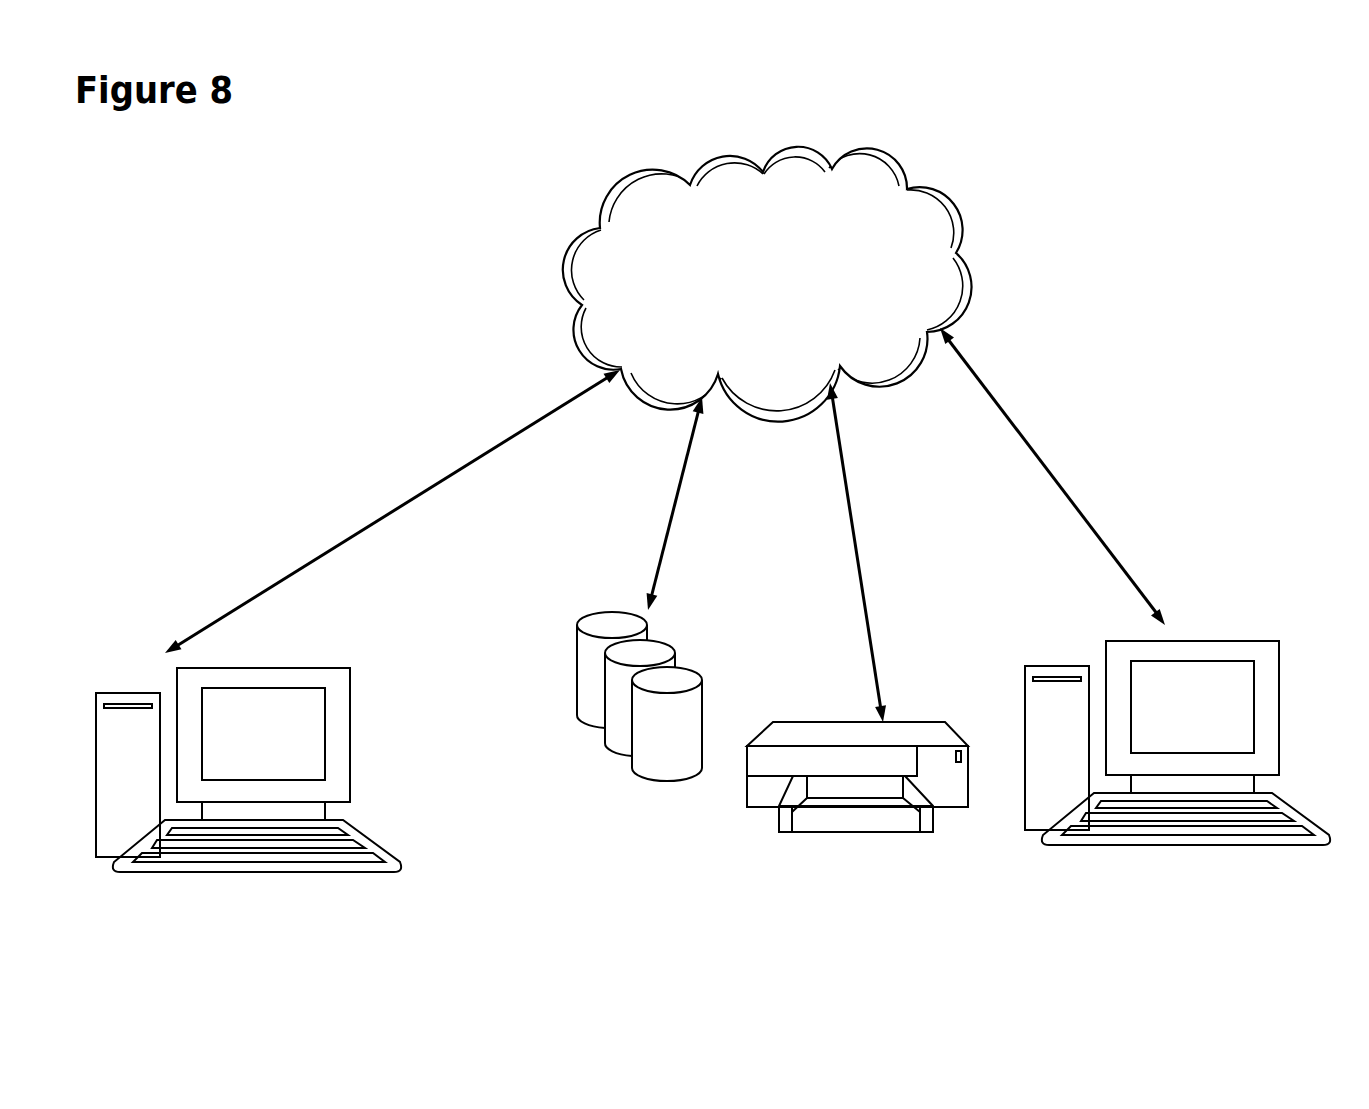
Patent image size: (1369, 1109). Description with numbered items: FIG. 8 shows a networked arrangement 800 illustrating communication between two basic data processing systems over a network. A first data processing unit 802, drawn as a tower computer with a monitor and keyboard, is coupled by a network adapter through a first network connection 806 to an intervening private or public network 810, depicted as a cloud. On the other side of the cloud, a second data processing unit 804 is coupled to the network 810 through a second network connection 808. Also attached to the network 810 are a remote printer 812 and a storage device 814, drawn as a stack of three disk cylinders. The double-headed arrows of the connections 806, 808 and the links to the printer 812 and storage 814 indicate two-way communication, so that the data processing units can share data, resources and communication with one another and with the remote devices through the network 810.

The network system 800 is at (1072, 131).
The data processing unit 802 is at (248, 819).
The data processing unit 804 is at (1177, 786).
The network connection 806 is at (392, 511).
The network connection 808 is at (1092, 476).
The network 810 is at (767, 284).
The printer 812 is at (857, 634).
The storage 814 is at (621, 616).